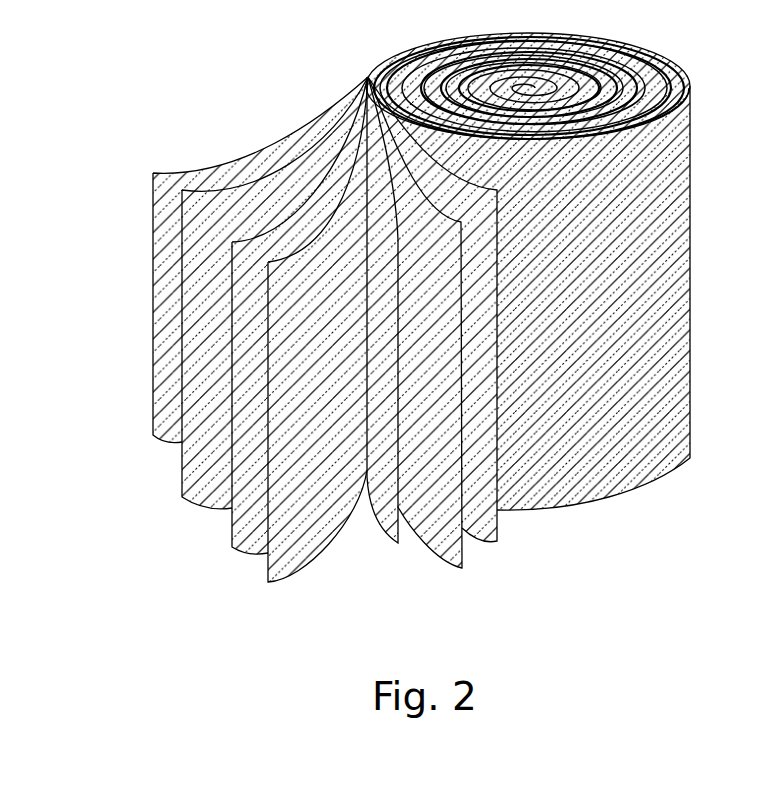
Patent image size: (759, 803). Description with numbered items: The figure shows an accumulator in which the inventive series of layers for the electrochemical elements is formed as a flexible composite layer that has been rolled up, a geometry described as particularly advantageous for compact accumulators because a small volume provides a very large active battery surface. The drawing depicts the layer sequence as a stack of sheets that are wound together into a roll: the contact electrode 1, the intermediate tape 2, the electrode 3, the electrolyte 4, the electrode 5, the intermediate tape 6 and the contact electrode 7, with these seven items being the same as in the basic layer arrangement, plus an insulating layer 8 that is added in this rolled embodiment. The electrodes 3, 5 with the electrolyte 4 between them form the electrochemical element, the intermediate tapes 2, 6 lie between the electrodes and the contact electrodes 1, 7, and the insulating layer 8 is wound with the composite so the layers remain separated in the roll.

The contact electrode 1 is at (453, 543).
The intermediate tape 2 is at (380, 507).
The electrode 3 is at (290, 543).
The electrolyte 4 is at (255, 538).
The electrode 5 is at (197, 482).
The intermediate tape 6 is at (165, 403).
The contact electrode 7 is at (652, 458).
The insulating layer 8 is at (483, 523).